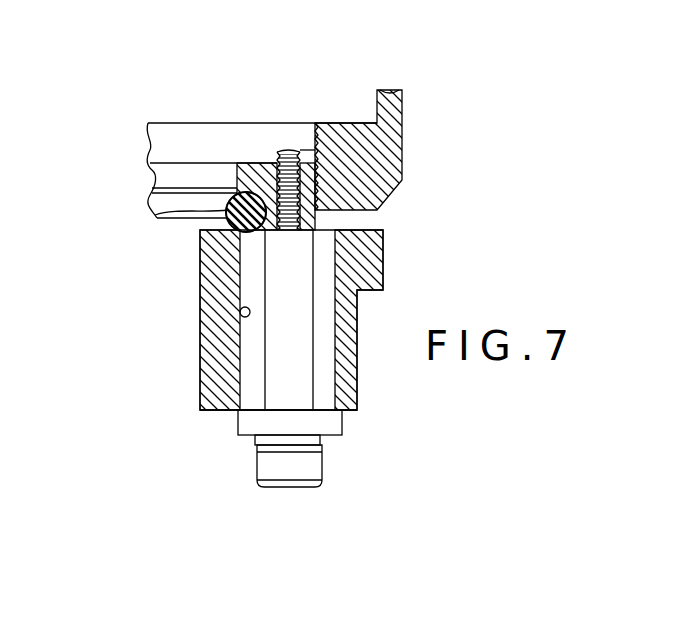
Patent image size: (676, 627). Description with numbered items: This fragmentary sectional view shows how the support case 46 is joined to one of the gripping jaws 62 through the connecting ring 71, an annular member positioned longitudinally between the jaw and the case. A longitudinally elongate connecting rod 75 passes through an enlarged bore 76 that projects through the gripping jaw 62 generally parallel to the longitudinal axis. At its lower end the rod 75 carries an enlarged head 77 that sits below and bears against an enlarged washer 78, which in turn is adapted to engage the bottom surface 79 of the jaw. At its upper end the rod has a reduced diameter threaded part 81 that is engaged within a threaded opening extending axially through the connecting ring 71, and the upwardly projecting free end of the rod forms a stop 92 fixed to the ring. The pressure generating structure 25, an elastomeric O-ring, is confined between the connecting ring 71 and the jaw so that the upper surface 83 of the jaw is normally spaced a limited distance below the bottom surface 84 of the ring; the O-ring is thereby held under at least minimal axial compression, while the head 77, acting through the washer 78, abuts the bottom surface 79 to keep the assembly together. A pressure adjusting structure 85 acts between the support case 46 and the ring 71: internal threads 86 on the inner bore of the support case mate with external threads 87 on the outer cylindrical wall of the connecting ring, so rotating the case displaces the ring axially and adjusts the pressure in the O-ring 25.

The pressure generating structure 25 is at (157, 215).
The support case 46 is at (385, 165).
The gripping jaw 62 is at (200, 290).
The connecting ring 71 is at (247, 163).
The connecting rod 75 is at (275, 342).
The bore 76 is at (240, 312).
The enlarged head 77 is at (272, 465).
The enlarged washer 78 is at (245, 428).
The bottom surface 79 is at (210, 413).
The threaded part 81 is at (237, 180).
The upper surface 83 is at (370, 230).
The bottom surface 84 is at (165, 220).
The pressure adjusting structure 85 is at (300, 152).
The internal threads 86 is at (306, 128).
The external threads 87 is at (322, 192).
The stop 92 is at (278, 150).